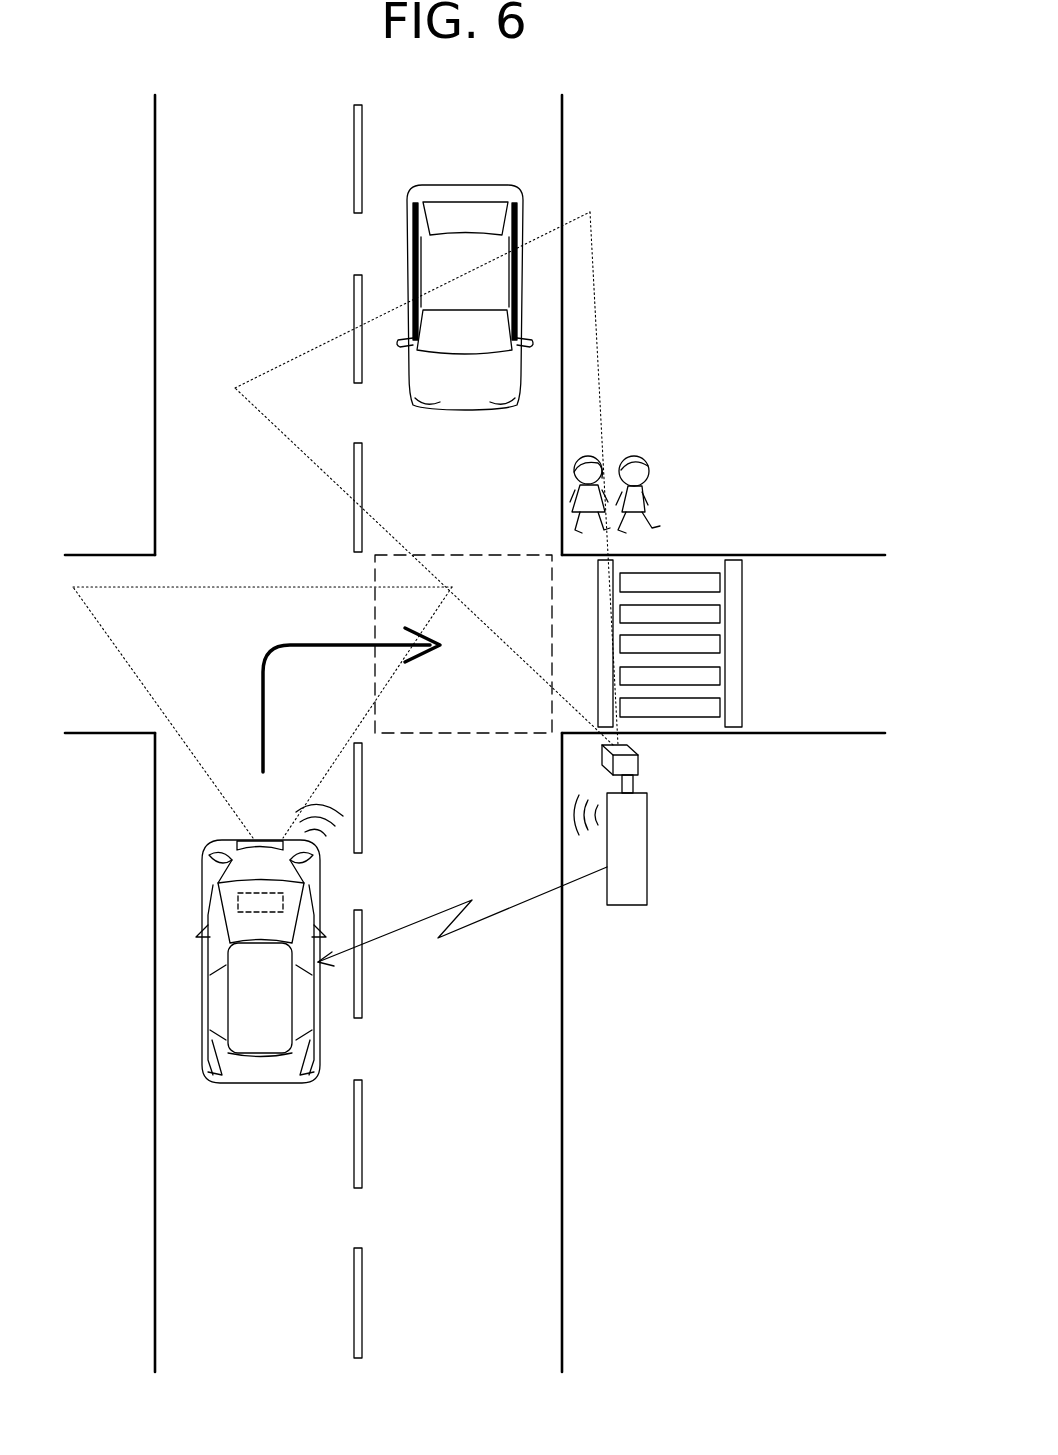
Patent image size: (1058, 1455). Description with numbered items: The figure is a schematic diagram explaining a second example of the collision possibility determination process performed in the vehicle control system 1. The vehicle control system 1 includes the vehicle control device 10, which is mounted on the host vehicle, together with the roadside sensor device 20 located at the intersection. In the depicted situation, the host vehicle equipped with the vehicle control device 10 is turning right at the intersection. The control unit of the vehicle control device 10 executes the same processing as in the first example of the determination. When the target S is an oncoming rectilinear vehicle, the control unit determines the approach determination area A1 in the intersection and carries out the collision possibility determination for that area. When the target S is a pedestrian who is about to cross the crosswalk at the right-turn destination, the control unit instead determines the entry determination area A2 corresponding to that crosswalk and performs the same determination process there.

The vehicle control system 1 is at (738, 1109).
The vehicle control device 10 is at (235, 895).
The roadside sensor device 20 is at (640, 760).
The approach determination area A1 is at (490, 553).
The entry determination area A2 is at (752, 604).
The target S is at (470, 168).